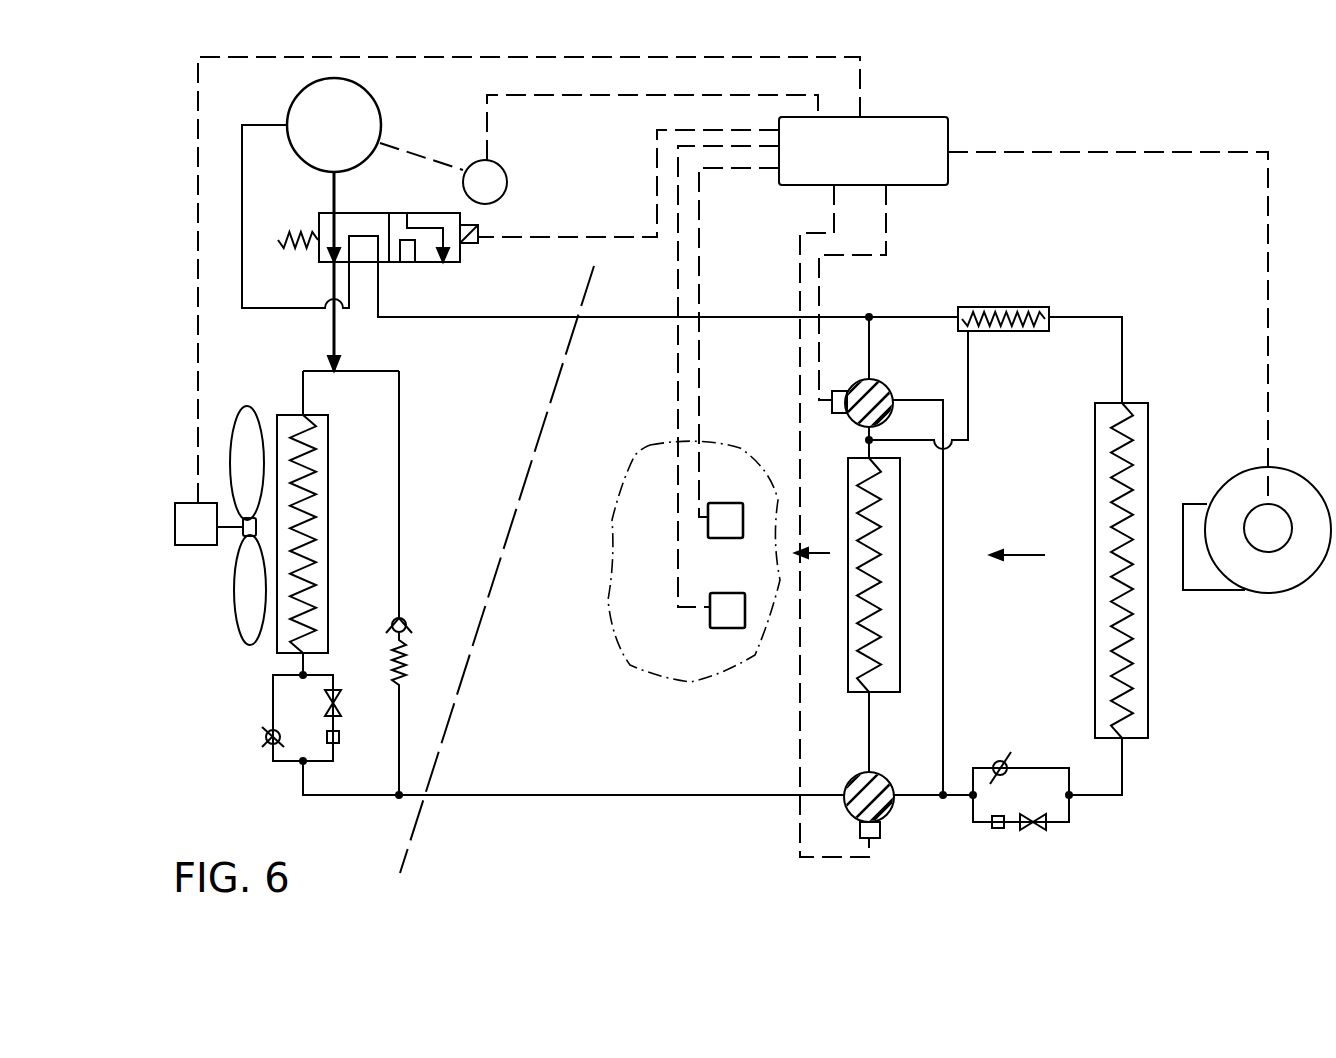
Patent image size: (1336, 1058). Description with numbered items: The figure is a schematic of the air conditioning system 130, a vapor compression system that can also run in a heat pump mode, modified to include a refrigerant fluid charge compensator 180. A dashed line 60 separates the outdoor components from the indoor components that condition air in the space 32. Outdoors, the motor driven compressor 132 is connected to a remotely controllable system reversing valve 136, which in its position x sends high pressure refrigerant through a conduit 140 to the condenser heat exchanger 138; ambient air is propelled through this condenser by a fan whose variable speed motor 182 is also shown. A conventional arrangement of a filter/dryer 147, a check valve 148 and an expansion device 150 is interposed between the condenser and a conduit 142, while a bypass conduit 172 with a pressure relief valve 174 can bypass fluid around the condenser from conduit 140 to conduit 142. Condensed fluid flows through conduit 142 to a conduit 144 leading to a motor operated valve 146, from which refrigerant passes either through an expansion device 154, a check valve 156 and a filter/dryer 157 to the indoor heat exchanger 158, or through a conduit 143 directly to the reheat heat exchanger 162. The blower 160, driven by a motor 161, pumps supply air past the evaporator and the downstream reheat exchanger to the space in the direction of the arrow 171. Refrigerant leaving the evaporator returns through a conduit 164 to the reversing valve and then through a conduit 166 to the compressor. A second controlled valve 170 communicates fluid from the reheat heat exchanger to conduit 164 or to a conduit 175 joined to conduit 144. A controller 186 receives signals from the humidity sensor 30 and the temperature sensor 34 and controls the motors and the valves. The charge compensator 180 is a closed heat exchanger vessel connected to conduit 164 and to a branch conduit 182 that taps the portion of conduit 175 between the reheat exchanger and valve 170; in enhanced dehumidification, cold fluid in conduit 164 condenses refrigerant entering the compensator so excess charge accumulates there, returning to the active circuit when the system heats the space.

The air conditioning system 130 is at (1108, 120).
The compressor 132 is at (410, 98).
The system reversing valve 136 is at (368, 212).
The condenser heat exchanger 138 is at (328, 437).
The conduit 140 is at (303, 390).
The conduit 142 is at (340, 796).
The conduit 143 is at (872, 738).
The conduit 144 is at (543, 795).
The motor operated valve 146 is at (895, 810).
The filter/dryer 147 is at (339, 737).
The check valve 148 is at (266, 735).
The expansion device 150 is at (341, 698).
The expansion device 154 is at (1044, 830).
The check valve 156 is at (1015, 732).
The filter/dryer 157 is at (996, 830).
The indoor heat exchanger 158 is at (1148, 685).
The blower 160 is at (1290, 592).
The motor 161 is at (1253, 508).
The reheat heat exchanger 162 is at (848, 680).
The conduit 164 is at (1064, 318).
The conduit 166 is at (264, 307).
The valve 170 is at (886, 382).
The arrow 171 is at (822, 553).
The bypass conduit 172 is at (399, 530).
The pressure relief valve 174 is at (404, 622).
The conduit 175 is at (943, 480).
The refrigerant fluid charge compensator 180 is at (236, 604).
The branch conduit 182 is at (190, 546).
The controller 186 is at (925, 97).
The humidity sensor 30 is at (716, 593).
The space 32 is at (665, 660).
The temperature sensor 34 is at (719, 503).
The dashed line 60 is at (450, 710).